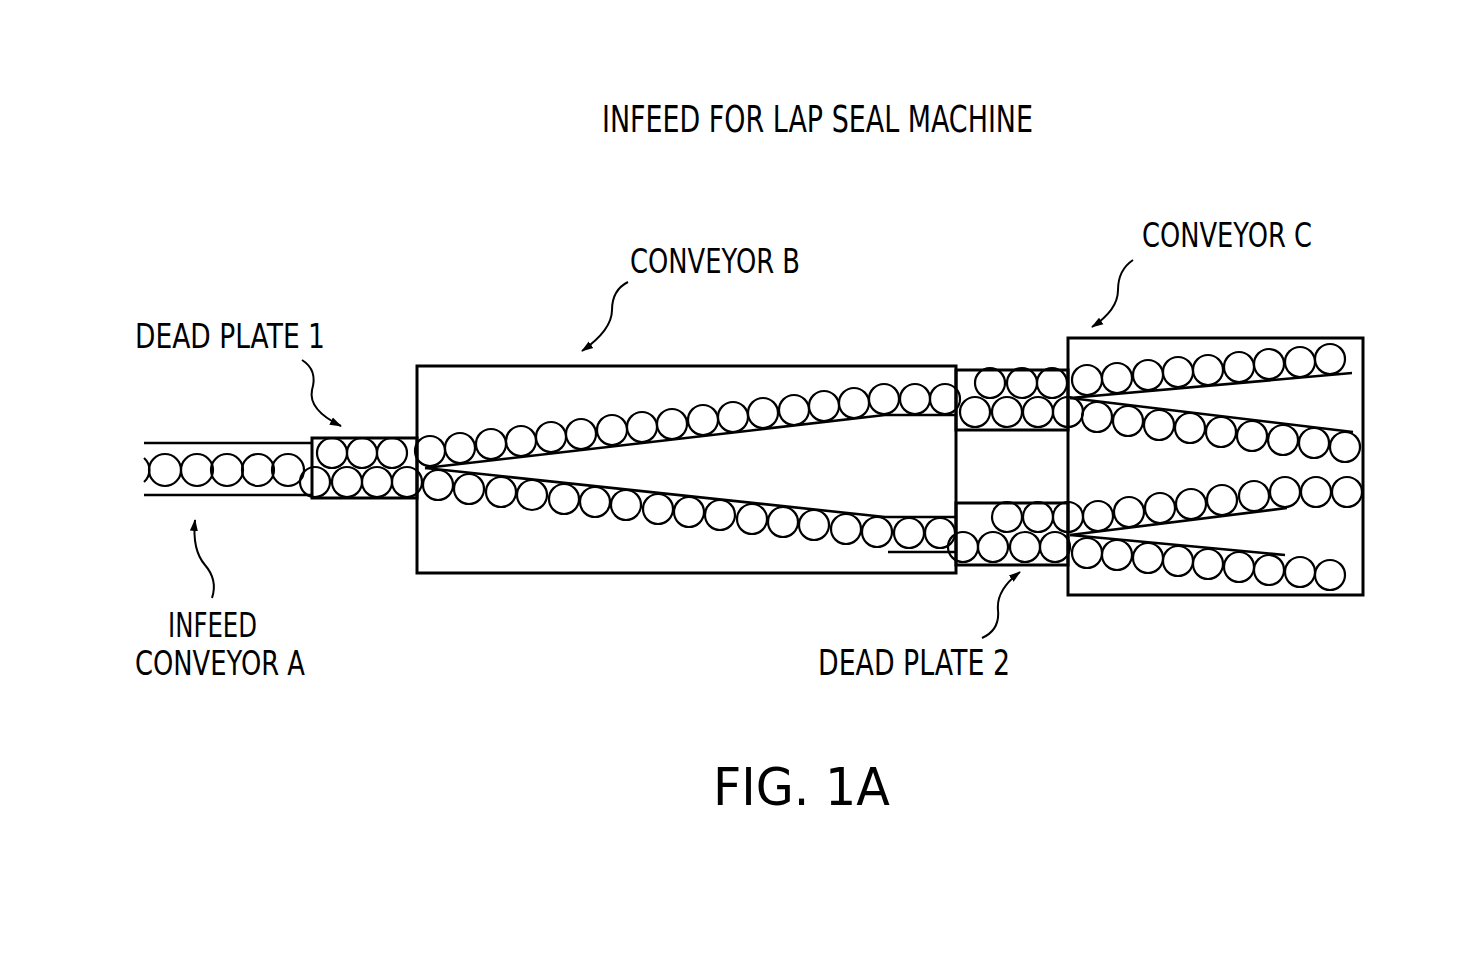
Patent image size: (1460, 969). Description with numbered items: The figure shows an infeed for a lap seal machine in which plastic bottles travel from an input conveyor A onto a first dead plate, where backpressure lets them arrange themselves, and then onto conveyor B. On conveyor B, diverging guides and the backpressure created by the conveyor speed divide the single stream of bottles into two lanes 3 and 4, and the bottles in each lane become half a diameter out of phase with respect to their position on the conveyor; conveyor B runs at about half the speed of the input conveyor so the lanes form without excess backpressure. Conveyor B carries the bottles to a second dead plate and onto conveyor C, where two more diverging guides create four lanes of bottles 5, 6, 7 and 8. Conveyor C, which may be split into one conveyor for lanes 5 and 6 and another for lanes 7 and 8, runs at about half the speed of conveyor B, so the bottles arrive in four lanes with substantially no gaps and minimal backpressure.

The lane 3 is at (603, 434).
The lane 4 is at (651, 510).
The lane of bottles 5 is at (1304, 576).
The lane of bottles 6 is at (1287, 498).
The lane of bottles 7 is at (1317, 439).
The lane of bottles 8 is at (1240, 366).